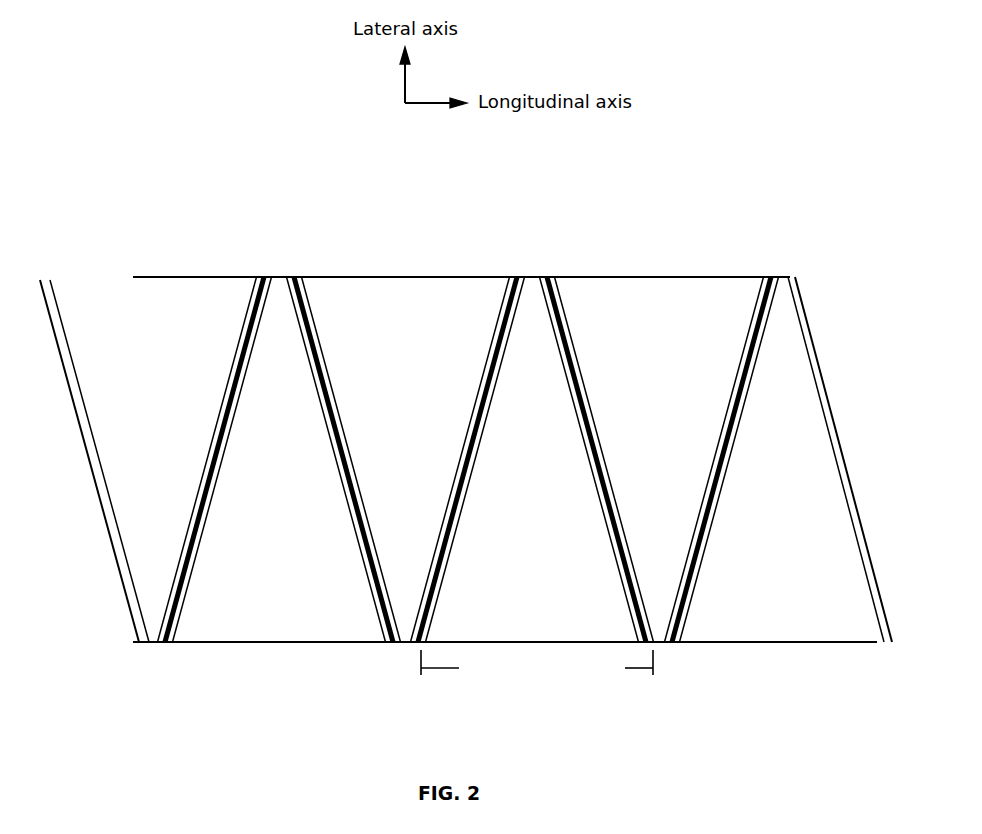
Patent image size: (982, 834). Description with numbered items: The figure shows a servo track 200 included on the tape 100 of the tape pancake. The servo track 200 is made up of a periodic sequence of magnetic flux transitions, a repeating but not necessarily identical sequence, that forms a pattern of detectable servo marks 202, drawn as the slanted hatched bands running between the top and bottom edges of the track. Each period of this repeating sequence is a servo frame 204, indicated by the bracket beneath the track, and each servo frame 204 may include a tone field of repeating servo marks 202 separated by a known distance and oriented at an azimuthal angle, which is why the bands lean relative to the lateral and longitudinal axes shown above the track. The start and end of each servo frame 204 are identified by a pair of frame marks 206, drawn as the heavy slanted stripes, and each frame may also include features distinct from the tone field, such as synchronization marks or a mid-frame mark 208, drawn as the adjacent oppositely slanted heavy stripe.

The tape 100 is at (817, 268).
The servo track 200 is at (160, 297).
The servo marks 202 is at (128, 523).
The servo frame 204 is at (537, 664).
The frame marks 206 is at (262, 256).
The mid-frame mark 208 is at (308, 258).